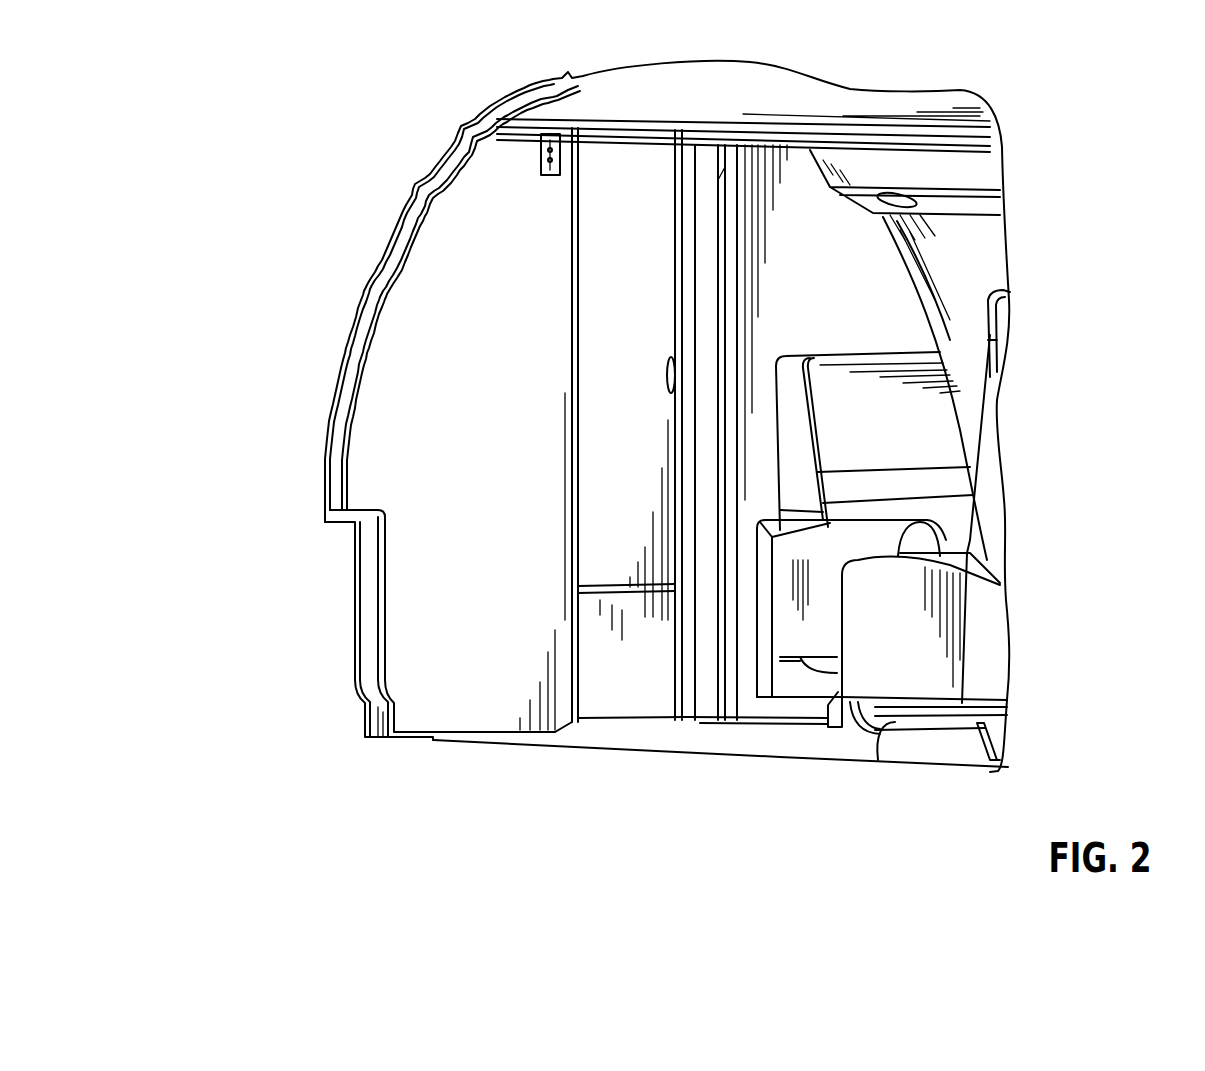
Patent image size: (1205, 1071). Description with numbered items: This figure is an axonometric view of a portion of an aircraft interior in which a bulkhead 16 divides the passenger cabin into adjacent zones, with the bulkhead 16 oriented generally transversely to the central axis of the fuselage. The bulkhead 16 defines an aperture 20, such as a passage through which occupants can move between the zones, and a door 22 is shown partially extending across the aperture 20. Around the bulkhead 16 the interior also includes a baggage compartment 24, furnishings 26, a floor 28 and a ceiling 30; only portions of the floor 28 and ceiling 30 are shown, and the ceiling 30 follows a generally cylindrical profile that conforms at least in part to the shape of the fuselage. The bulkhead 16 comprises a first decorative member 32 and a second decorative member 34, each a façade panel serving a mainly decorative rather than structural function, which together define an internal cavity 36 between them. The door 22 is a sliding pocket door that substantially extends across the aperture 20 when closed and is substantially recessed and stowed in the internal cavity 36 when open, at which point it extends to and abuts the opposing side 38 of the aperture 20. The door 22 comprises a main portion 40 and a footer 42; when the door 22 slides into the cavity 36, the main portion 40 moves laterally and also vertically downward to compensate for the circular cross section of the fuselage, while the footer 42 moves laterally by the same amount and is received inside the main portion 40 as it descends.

The bulkhead 16 is at (306, 655).
The aperture 20 is at (688, 672).
The door 22 is at (611, 268).
The baggage compartment 24 is at (978, 177).
The furnishings 26 is at (948, 433).
The floor 28 is at (803, 738).
The ceiling 30 is at (680, 90).
The first decorative member 32 is at (368, 435).
The second decorative member 34 is at (343, 362).
The internal cavity 36 is at (380, 283).
The opposing side 38 is at (703, 700).
The main portion 40 is at (607, 168).
The footer 42 is at (608, 672).